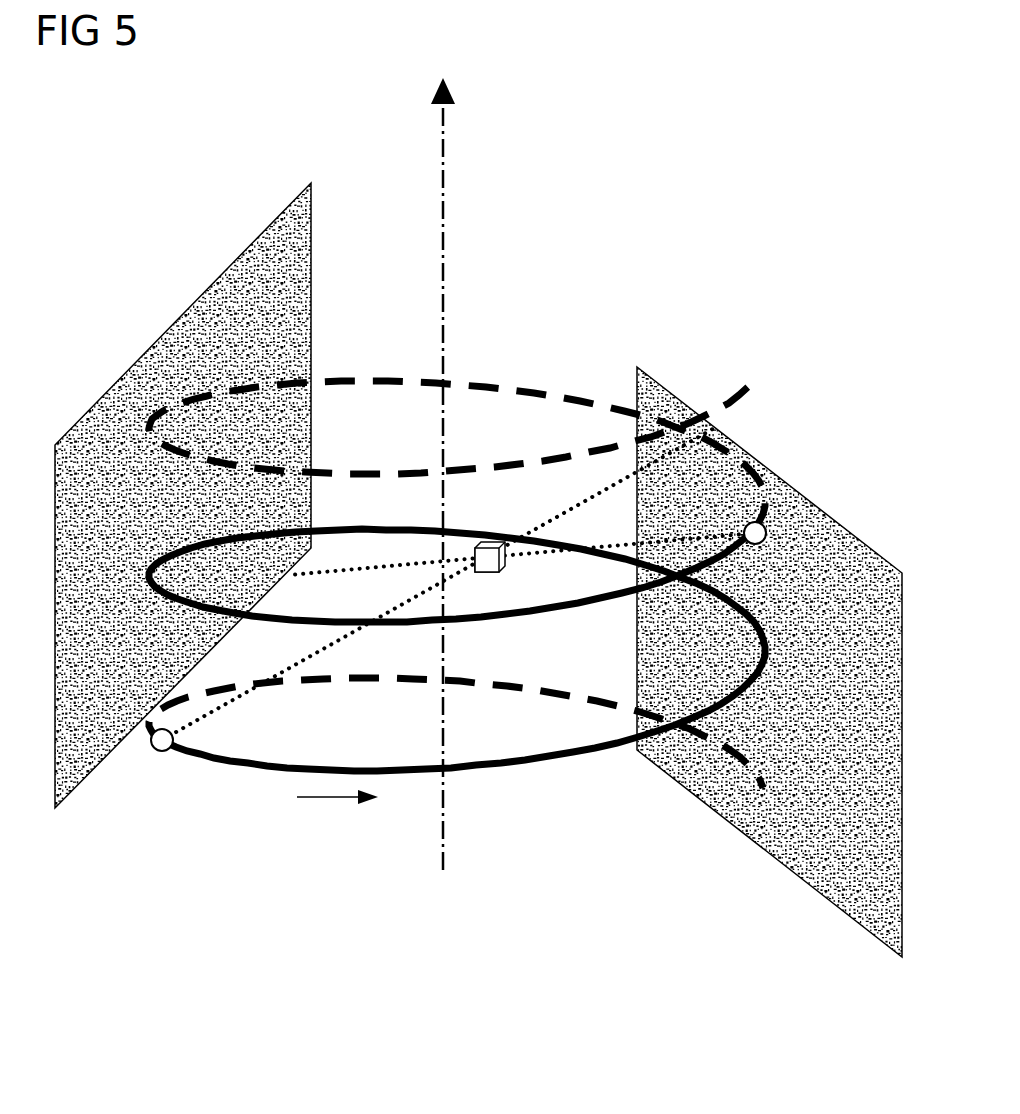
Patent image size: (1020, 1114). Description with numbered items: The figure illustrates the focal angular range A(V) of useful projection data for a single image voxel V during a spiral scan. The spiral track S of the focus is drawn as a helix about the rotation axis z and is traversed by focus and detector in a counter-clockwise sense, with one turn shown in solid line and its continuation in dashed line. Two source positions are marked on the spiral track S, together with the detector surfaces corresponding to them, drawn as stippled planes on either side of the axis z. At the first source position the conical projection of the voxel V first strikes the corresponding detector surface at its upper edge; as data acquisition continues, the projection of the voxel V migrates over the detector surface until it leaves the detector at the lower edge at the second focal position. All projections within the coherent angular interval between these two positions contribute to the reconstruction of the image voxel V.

The helical source trajectory (scan path) S is at (521, 386).
The rotation axis (z-axis) z is at (447, 193).
The image voxel V is at (503, 562).